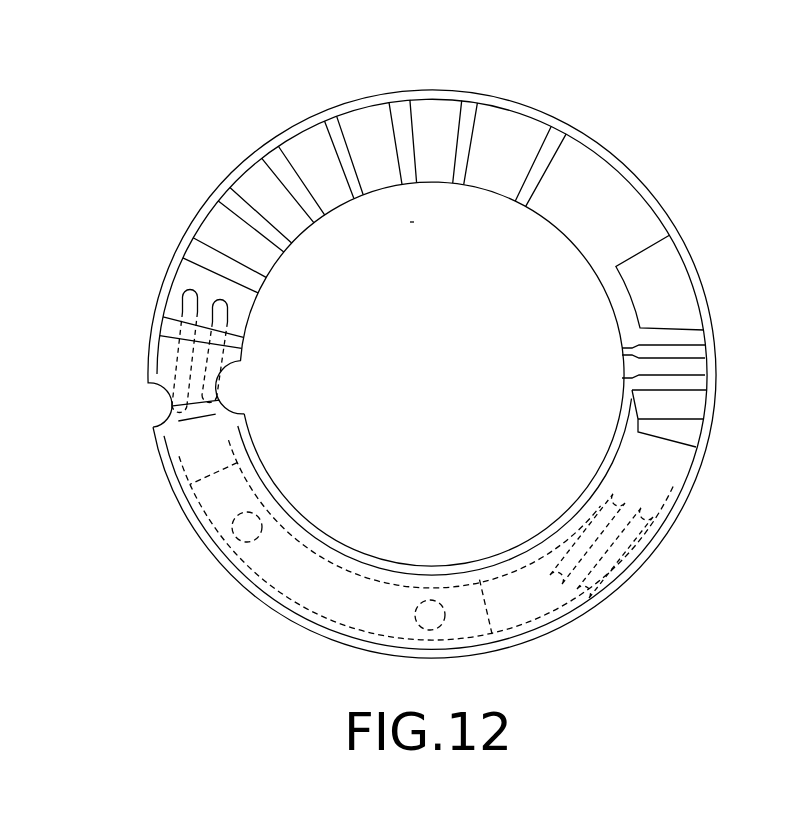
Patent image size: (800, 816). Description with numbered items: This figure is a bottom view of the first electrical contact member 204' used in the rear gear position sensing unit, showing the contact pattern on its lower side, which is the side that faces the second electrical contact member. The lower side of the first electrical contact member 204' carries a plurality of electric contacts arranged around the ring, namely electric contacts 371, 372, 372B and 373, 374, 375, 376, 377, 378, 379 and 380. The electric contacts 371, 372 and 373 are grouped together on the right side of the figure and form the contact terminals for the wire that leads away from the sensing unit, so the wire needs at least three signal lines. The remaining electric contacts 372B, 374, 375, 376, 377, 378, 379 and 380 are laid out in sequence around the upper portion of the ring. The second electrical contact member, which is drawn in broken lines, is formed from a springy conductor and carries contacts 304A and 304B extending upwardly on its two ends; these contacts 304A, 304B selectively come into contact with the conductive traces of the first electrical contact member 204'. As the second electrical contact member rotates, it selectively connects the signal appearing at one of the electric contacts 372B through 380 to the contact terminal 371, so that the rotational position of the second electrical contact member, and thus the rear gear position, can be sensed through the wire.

The first electrical contact member 204' is at (445, 374).
The electric contact 371 is at (693, 407).
The electric contact 372 is at (695, 368).
The electric contact 373 is at (702, 338).
The electric contact 374 is at (497, 113).
The electric contact 375 is at (427, 107).
The electric contact 376 is at (353, 117).
The electric contact 377 is at (292, 148).
The electric contact 378 is at (247, 180).
The electric contact 379 is at (207, 227).
The electric contact 380 is at (183, 275).
The contact 304A is at (173, 303).
The contact 304B is at (648, 510).
The electric contact 372B is at (170, 372).